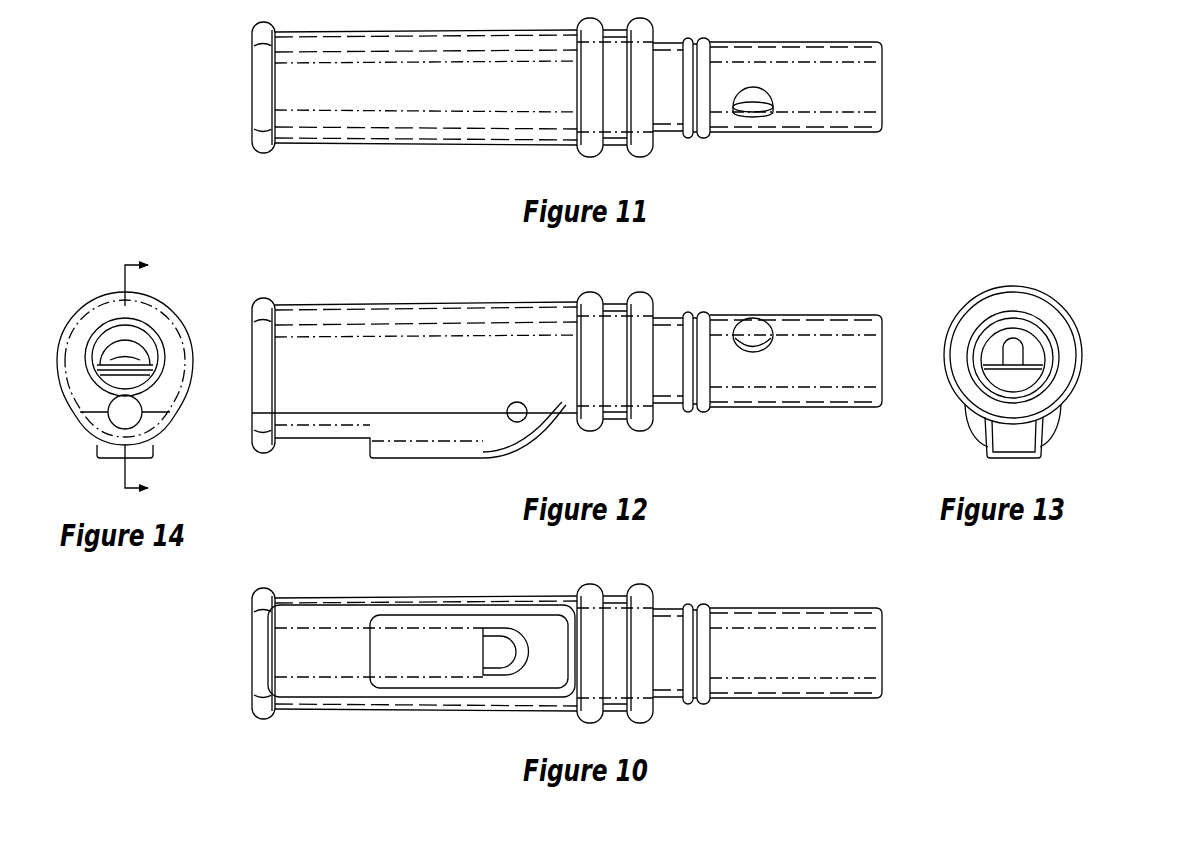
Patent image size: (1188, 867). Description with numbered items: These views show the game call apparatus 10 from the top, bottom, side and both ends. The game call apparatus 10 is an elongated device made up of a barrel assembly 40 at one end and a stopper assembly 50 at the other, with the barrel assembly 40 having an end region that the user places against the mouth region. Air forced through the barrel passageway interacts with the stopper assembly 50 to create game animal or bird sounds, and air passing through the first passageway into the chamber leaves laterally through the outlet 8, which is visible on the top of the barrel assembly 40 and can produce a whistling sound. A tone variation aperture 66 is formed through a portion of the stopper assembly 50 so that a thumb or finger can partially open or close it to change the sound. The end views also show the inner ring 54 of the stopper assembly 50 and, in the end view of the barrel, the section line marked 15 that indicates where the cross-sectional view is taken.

In FIG. 11, the game call apparatus 10 is at (646, 109).
In FIG. 12, the game call apparatus 10 is at (566, 363).
In FIG. 10, the game call apparatus 10 is at (567, 639).
In FIG. 14, the game call apparatus 10 is at (114, 363).
In FIG. 13, the game call apparatus 10 is at (1040, 332).
In FIG. 11, the barrel assembly 40 is at (355, 150).
In FIG. 12, the barrel assembly 40 is at (335, 460).
In FIG. 10, the barrel assembly 40 is at (357, 720).
In FIG. 11, the stopper assembly 50 is at (765, 142).
In FIG. 12, the stopper assembly 50 is at (681, 433).
In FIG. 10, the stopper assembly 50 is at (704, 724).
In FIG. 11, the tone variation aperture 66 is at (763, 100).
In FIG. 12, the tone variation aperture 66 is at (755, 335).
In FIG. 10, the outlet 8 is at (495, 667).
In FIG. 13, the inner ring 54 is at (1051, 396).
In FIG. 14, the cylinder tube 15 is at (158, 379).